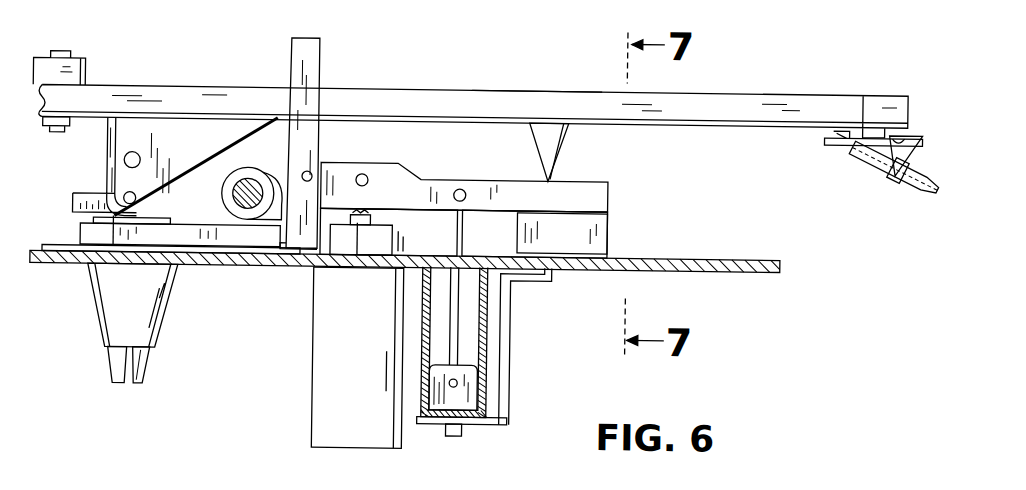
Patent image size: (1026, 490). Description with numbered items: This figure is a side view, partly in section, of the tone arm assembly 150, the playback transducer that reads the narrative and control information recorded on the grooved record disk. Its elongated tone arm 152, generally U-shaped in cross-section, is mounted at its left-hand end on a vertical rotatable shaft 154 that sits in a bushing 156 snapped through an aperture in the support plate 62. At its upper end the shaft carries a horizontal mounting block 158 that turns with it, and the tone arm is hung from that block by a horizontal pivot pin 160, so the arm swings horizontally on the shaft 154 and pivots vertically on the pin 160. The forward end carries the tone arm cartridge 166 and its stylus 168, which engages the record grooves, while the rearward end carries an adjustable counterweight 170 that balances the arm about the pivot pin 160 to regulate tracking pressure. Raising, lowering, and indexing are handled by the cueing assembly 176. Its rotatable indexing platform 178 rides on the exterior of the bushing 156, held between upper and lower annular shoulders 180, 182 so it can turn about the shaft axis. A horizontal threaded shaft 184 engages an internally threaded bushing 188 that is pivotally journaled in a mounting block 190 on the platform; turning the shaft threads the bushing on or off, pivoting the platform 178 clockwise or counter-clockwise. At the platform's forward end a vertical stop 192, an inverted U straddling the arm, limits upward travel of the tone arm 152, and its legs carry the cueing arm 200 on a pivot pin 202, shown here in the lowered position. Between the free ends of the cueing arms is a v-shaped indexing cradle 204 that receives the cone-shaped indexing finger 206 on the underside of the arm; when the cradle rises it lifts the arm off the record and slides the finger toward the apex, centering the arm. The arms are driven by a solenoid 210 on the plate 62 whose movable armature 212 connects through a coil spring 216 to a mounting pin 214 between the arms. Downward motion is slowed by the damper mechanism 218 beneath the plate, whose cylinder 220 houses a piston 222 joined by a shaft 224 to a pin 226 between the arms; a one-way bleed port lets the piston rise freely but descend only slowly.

The support plate 62 is at (721, 266).
The tone arm assembly 150 is at (483, 72).
The tone arm 152 is at (526, 87).
The vertical rotatable shaft 154 is at (113, 218).
The bushing 156 is at (168, 311).
The horizontal mounting block 158 is at (106, 188).
The horizontal pivot pin 160 is at (134, 182).
The tone arm cartridge 166 is at (873, 154).
The stylus 168 is at (940, 189).
The adjustable counterweight 170 is at (66, 71).
The cueing assembly 176 is at (631, 193).
The indexing platform 178 is at (201, 238).
The upper annular shoulder 180 is at (172, 219).
The lower annular shoulder 182 is at (63, 255).
The horizontal threaded shaft 184 is at (246, 210).
The internally threaded bushing 188 is at (249, 169).
The mounting block 190 is at (226, 150).
The vertical stop 192 is at (309, 58).
The cueing arm 200 is at (405, 175).
The pivot pin 202 is at (311, 172).
The v-shaped indexing cradle 204 is at (607, 224).
The cone-shaped indexing finger 206 is at (565, 135).
The solenoid 210 is at (330, 393).
The movable armature 212 is at (357, 240).
The mounting pin 214 is at (367, 176).
The coil spring 216 is at (370, 216).
The damper mechanism 218 is at (497, 348).
The cylinder 220 is at (472, 300).
The piston 222 is at (463, 402).
The shaft 224 is at (462, 241).
The pin 226 is at (463, 188).